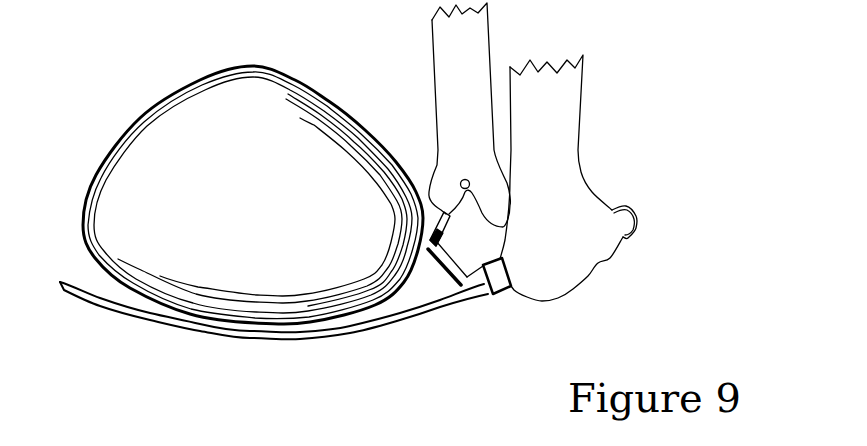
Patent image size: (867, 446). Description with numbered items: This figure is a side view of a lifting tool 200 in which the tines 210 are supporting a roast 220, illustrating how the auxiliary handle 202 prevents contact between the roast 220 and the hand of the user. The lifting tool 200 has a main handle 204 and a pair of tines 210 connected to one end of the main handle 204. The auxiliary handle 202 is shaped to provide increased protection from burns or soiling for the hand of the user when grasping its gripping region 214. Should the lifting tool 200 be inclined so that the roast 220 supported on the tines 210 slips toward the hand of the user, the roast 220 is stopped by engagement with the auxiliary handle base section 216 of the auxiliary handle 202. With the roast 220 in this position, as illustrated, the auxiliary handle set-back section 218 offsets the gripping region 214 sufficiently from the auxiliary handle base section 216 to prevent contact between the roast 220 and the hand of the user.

The lifting tool 200 is at (452, 336).
The auxiliary handle 202 is at (420, 187).
The main handle 204 is at (642, 214).
The tines 210 is at (138, 311).
The gripping region 214 is at (469, 182).
The auxiliary handle base section 216 is at (450, 267).
The auxiliary handle set-back section 218 is at (440, 228).
The roast 220 is at (169, 138).